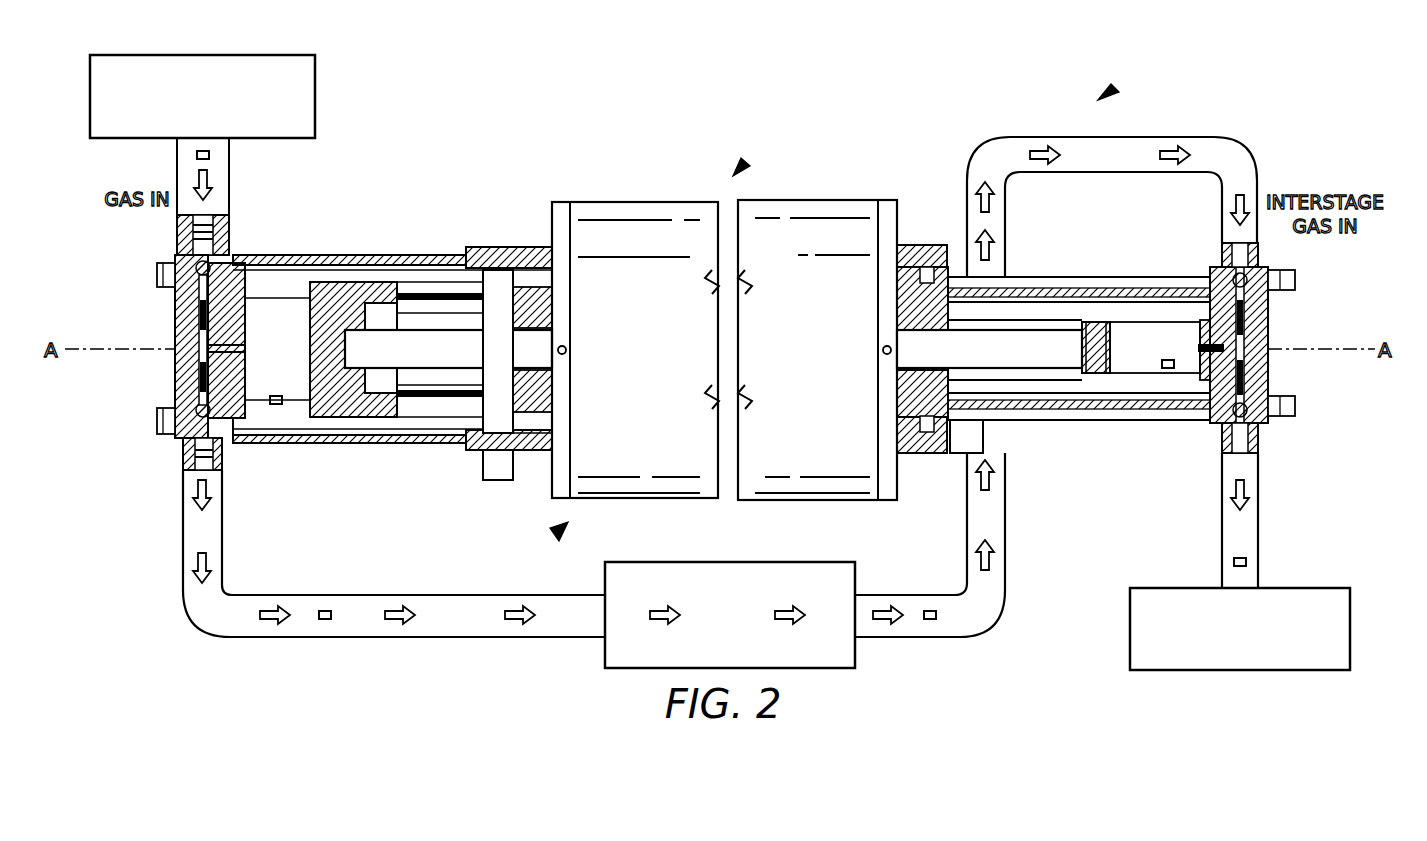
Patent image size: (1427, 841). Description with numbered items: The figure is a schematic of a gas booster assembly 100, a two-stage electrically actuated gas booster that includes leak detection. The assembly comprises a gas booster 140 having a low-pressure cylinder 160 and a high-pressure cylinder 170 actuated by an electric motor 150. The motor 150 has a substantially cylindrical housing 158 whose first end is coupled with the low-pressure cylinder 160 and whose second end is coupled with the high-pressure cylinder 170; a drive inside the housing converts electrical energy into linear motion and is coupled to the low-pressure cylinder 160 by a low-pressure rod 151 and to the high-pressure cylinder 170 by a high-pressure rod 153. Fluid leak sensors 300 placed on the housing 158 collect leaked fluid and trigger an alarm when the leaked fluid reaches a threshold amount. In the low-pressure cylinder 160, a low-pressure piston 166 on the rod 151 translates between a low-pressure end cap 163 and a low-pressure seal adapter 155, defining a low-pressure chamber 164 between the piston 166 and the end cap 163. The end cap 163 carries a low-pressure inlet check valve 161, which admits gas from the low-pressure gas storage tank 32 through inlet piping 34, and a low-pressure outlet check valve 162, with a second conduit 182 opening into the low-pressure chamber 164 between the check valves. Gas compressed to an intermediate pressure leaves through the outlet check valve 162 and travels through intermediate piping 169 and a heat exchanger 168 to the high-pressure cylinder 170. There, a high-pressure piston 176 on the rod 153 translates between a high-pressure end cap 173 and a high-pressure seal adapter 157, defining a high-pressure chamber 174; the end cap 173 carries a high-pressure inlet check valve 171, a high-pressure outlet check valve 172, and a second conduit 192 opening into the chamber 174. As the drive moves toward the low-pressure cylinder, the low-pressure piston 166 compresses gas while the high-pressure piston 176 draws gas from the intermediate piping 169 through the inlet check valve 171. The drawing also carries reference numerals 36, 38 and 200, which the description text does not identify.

The low-pressure gas storage tank 32 is at (315, 90).
The inlet piping 34 is at (229, 185).
The high-pressure gas storage tank 36 is at (1130, 626).
The high-pressure gas outlet line 38 is at (1222, 522).
The gas booster assembly 100 is at (1116, 90).
The gas booster 140 is at (748, 160).
The electric motor 150 is at (655, 305).
The low-pressure rod 151 is at (435, 362).
The high-pressure rod 153 is at (920, 346).
The low-pressure seal adapter 155 is at (516, 247).
The high-pressure seal adapter 157 is at (921, 245).
The housing 158 is at (554, 536).
The low-pressure cylinder 160 is at (248, 262).
The low-pressure inlet check valve 161 is at (177, 250).
The low-pressure outlet check valve 162 is at (185, 405).
The low-pressure end cap 163 is at (175, 318).
The low-pressure chamber 164 is at (298, 290).
The low-pressure piston 166 is at (322, 262).
The heat exchanger 168 is at (665, 562).
The intermediate piping 169 is at (457, 640).
The high-pressure cylinder 170 is at (1116, 277).
The high-pressure inlet check valve 171 is at (1260, 258).
The high-pressure outlet check valve 172 is at (1258, 435).
The high-pressure end cap 173 is at (1268, 328).
The high-pressure chamber 174 is at (1135, 378).
The high-pressure piston 176 is at (1090, 375).
The second conduit 182 is at (242, 351).
The second conduit 192 is at (1200, 347).
The sensor 200 is at (210, 155).
The fluid leak sensors 300 is at (494, 482).